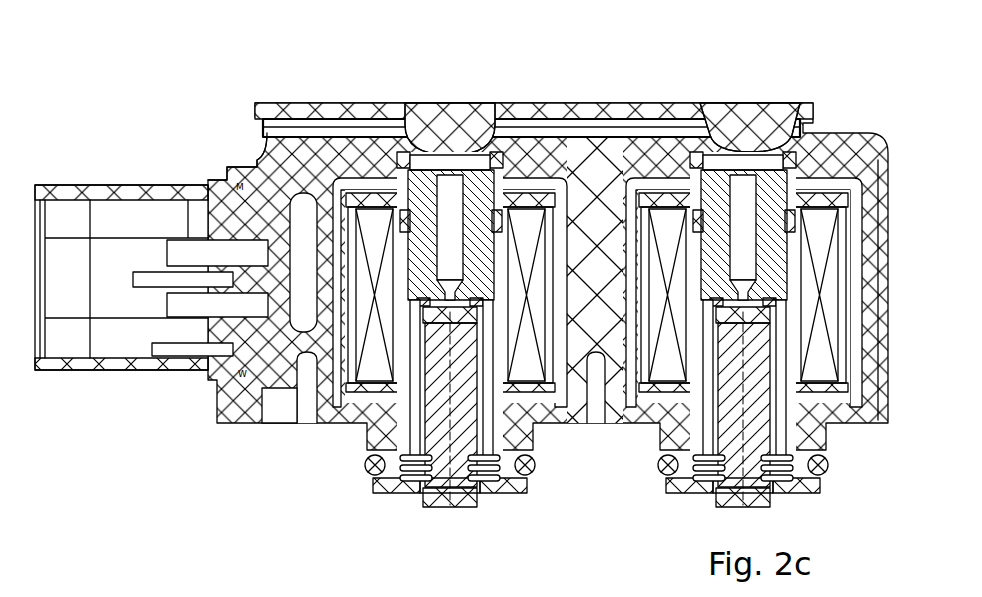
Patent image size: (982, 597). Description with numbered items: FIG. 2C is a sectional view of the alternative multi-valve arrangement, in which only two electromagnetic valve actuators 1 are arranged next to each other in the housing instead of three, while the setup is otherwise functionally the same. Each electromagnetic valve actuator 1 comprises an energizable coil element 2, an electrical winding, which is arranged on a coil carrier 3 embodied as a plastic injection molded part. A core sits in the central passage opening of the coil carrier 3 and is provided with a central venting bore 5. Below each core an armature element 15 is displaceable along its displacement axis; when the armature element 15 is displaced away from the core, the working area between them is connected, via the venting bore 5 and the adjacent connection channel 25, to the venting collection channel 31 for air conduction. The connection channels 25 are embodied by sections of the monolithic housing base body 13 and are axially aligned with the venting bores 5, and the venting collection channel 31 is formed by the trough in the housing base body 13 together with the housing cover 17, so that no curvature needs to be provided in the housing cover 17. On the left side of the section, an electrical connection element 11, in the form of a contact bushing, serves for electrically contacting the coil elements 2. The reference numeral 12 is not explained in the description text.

The electromagnetic valve actuator 1 is at (330, 447).
The coil element 2 is at (377, 253).
The coil carrier 3 is at (345, 200).
The central venting bore 5 is at (440, 217).
The electrical connection element 11 is at (117, 333).
The seal 12 is at (557, 112).
The housing base body 13 is at (270, 160).
The armature element 15 is at (447, 420).
The housing cover 17 is at (350, 110).
The connection channel 25 is at (420, 163).
The venting collection channel 31 is at (620, 133).